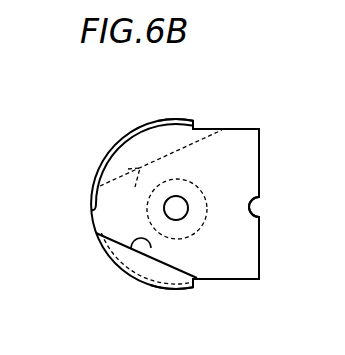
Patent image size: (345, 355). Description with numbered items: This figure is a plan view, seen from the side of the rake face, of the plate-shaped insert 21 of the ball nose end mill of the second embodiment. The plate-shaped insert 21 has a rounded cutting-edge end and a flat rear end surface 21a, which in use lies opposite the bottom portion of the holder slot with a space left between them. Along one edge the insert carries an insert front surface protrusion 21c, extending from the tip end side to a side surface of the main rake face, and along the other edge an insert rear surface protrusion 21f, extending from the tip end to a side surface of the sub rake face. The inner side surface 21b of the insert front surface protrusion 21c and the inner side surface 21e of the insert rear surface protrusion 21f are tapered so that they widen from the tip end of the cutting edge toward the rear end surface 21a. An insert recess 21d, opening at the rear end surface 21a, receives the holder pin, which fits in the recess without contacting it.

The plate-shaped insert 21 is at (243, 128).
The rear end surface 21a is at (261, 158).
The inner side surface of insert front surface protrusion 21b is at (118, 181).
The insert front surface protrusion 21c is at (158, 132).
The insert recess 21d is at (256, 207).
The inner side surface of insert rear surface protrusion 21e is at (150, 238).
The insert rear surface protrusion 21f is at (182, 274).